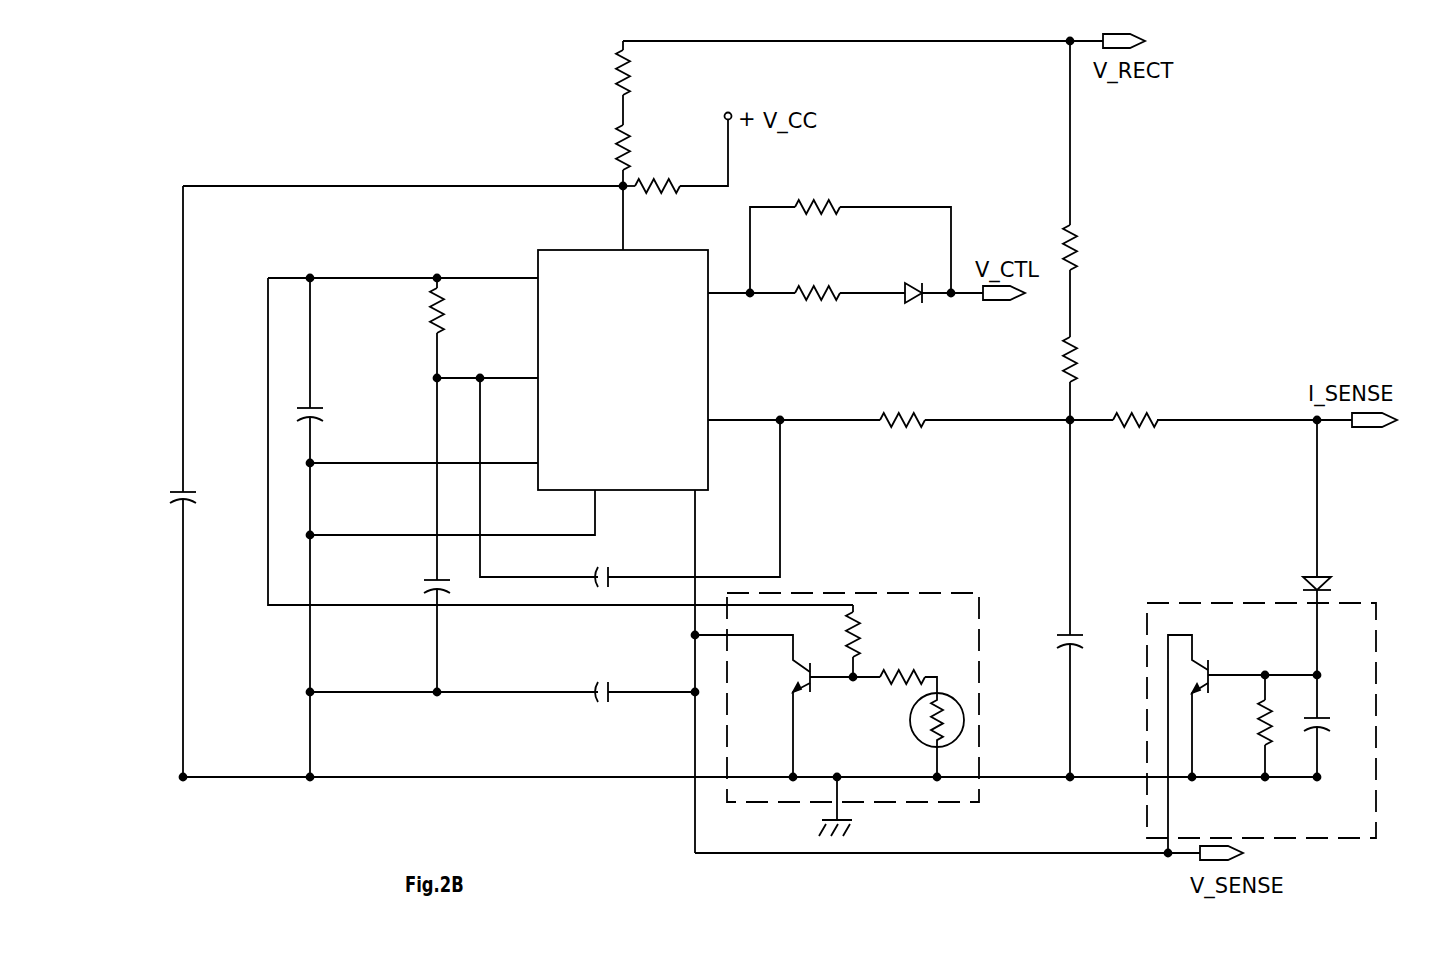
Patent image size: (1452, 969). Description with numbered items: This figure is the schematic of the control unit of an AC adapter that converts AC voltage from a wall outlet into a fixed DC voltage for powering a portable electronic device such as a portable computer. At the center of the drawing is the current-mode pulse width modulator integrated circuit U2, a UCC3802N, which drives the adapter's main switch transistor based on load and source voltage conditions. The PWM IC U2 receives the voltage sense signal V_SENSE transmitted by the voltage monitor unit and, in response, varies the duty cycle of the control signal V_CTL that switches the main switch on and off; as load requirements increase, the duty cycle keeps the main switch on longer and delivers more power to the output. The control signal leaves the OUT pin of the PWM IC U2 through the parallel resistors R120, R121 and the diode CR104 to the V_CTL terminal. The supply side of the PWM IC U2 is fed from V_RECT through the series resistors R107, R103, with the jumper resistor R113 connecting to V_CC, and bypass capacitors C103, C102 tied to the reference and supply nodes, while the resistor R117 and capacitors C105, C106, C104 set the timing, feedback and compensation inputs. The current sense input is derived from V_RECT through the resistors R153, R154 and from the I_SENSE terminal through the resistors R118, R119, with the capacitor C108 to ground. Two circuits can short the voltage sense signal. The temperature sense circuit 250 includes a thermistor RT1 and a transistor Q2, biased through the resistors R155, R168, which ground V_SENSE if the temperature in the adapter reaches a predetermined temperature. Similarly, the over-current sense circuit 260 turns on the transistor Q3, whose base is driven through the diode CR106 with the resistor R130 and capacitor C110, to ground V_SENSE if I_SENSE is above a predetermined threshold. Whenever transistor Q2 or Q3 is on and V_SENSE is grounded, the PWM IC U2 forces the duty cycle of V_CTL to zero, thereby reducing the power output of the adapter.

The temperature sense circuit 250 is at (837, 681).
The over-current sense circuit 260 is at (1283, 710).
The current-mode pulse width modulator integrated circuit U2 is at (606, 363).
The transistor Q2 is at (752, 706).
The transistor Q3 is at (1237, 728).
The thermistor RT1 is at (913, 735).
The resistor 240K R107 is at (592, 67).
The resistor 240K R103 is at (592, 148).
The jumper resistor R113 is at (665, 189).
The resistor 69.8K R117 is at (403, 324).
The resistor 1K R118 is at (1137, 449).
The resistor 10K R119 is at (905, 421).
The resistor 150 R120 is at (822, 228).
The resistor 20 R121 is at (822, 289).
The resistor 1K R130 is at (1235, 721).
The resistor 750K R153 is at (1101, 244).
The resistor 750K R154 is at (1101, 374).
The resistor R155 is at (883, 633).
The resistor R168 is at (907, 663).
The capacitor .1uF C102 is at (342, 418).
The capacitor 47uF C103 is at (215, 503).
The capacitor C104 is at (634, 568).
The capacitor 220pF C105 is at (404, 575).
The capacitor .047uF C106 is at (601, 689).
The capacitor 100pF C108 is at (1040, 615).
The capacitor 1000pF C110 is at (1324, 778).
The diode PMBD914 CR104 is at (909, 319).
The diode PMBD914 CR106 is at (1268, 556).